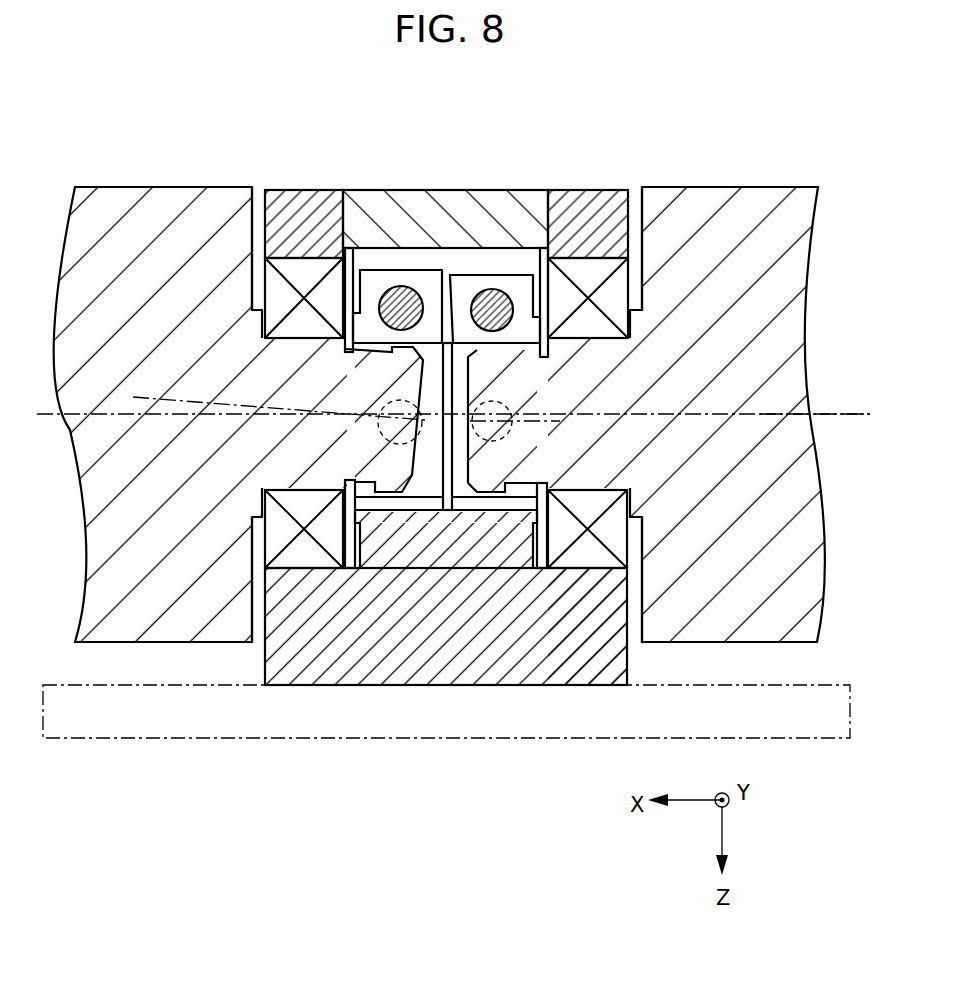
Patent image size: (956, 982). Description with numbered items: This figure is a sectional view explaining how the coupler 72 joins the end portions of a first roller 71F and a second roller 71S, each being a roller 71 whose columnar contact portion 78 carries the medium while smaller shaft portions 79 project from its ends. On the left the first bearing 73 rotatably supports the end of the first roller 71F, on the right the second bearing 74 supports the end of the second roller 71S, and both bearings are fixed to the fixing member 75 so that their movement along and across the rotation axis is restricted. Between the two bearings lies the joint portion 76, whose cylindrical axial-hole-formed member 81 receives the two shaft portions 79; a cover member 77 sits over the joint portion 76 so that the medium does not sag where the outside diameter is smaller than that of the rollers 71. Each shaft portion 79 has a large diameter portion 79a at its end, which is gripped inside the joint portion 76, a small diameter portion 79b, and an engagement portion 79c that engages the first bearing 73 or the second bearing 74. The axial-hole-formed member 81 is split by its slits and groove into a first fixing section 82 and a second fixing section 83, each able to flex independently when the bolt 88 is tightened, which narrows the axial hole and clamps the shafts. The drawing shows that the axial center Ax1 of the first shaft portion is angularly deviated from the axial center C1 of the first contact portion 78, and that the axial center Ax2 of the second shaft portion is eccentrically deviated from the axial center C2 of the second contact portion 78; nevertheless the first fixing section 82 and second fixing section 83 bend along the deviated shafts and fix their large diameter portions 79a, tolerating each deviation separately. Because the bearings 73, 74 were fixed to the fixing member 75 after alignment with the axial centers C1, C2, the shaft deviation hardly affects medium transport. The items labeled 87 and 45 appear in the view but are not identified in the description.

The roller 71 is at (439, 369).
The first roller 71F is at (135, 168).
The second roller 71S is at (697, 166).
The coupler 72 is at (321, 165).
The first bearing 73 is at (263, 547).
The second bearing 74 is at (631, 542).
The fixing member 75 is at (577, 686).
The joint portion 76 is at (523, 252).
The cover member 77 is at (408, 190).
The contact portion 78 is at (233, 186).
The shaft portion 79 is at (577, 567).
The large diameter portion 79a is at (471, 537).
The small diameter portion 79b is at (480, 498).
The engagement portion 79c is at (573, 571).
The axial-hole-formed member 81 is at (384, 569).
The first fixing section 82 is at (392, 286).
The second fixing section 83 is at (493, 288).
The pivot sphere 87 is at (397, 401).
The bolt 88 is at (402, 286).
The substrate 45 is at (57, 685).
The axial center of rotation of the contact portion of the first roller C1 is at (92, 415).
The axial center of rotation of the contact portion of the second roller C2 is at (768, 415).
The axial center of rotation of the shaft portion of the first roller Ax1 is at (190, 400).
The axial center of rotation of the shaft portion of the second roller Ax2 is at (533, 418).